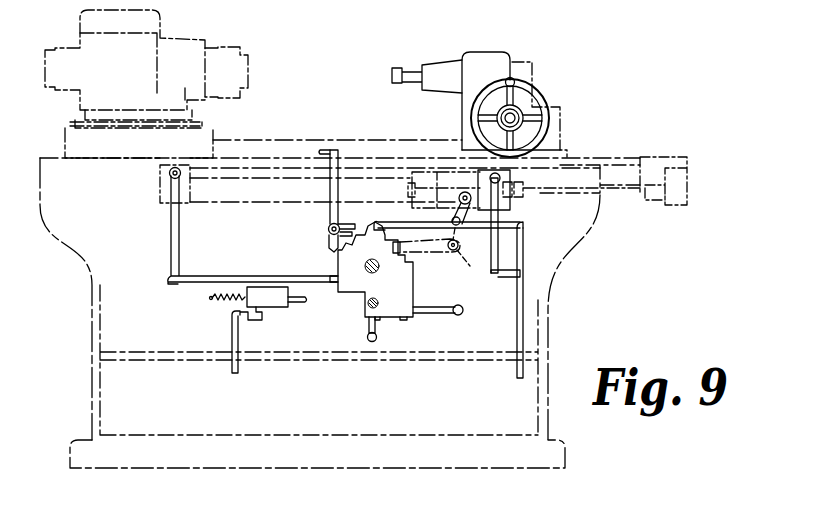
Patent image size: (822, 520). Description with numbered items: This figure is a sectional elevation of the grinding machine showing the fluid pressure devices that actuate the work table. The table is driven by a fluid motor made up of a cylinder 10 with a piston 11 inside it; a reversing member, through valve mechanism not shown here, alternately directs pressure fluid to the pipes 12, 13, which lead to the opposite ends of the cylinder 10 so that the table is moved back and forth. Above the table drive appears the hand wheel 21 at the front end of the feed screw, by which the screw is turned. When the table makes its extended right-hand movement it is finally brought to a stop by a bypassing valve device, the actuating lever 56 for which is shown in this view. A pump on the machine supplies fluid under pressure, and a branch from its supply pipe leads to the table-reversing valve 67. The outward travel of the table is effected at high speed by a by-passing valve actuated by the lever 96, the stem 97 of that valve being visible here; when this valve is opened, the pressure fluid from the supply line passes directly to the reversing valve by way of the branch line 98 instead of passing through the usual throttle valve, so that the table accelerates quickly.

The cylinder 10 is at (262, 182).
The piston 11 is at (421, 178).
The pipe 12 is at (177, 247).
The pipe 13 is at (540, 253).
The hand wheel 21 is at (542, 98).
The actuating lever 56 is at (333, 148).
The table-reversing valve 67 is at (392, 312).
The lever 96 is at (440, 250).
The valve stem 97 is at (399, 253).
The branch line 98 is at (433, 313).